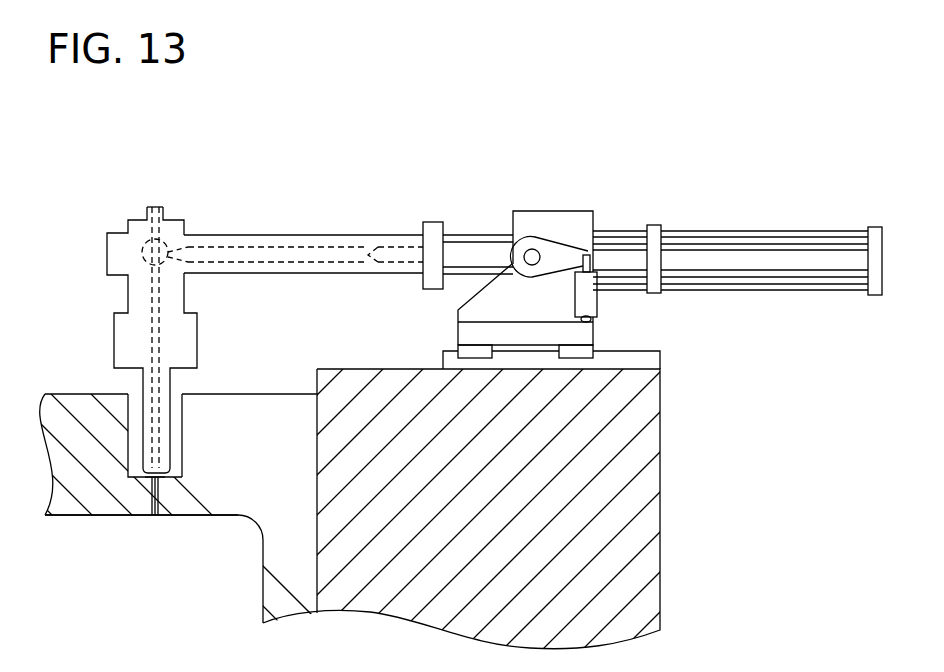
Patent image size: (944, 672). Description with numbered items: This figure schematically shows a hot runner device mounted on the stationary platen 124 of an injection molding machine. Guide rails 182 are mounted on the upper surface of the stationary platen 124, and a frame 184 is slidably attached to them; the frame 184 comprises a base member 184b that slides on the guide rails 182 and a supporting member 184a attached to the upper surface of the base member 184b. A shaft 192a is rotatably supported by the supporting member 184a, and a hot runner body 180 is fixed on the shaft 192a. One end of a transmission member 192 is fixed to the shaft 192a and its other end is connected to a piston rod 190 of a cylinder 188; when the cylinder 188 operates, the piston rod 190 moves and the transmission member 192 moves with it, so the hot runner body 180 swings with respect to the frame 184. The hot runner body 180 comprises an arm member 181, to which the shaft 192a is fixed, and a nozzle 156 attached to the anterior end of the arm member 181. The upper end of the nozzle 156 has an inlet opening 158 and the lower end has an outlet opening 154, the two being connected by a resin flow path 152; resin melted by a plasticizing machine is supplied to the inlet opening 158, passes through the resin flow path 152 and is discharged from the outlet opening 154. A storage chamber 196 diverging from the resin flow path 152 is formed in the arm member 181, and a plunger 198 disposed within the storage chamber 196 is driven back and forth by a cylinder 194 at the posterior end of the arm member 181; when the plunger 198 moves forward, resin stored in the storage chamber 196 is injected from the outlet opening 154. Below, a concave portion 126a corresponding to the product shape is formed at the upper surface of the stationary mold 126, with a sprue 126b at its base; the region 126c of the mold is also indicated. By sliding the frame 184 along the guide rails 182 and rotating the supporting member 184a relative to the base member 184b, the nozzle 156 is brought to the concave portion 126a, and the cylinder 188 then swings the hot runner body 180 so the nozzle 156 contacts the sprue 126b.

The stationary platen 124 is at (661, 489).
The stationary mold 126 is at (58, 394).
The concave portion 126a is at (133, 413).
The sprue 126b is at (158, 505).
The bottom surface 126c is at (105, 517).
The resin flow path 152 is at (147, 302).
The outlet opening 154 is at (155, 517).
The nozzle 156 is at (178, 415).
The inlet opening 158 is at (155, 207).
The hot runner body 180 is at (778, 227).
The arm member 181 is at (318, 235).
The guide rails 182 is at (660, 360).
The frame 184 is at (580, 210).
The supporting member 184a is at (472, 309).
The base member 184b is at (475, 334).
The cylinder 188 is at (598, 300).
The piston rod 190 is at (590, 256).
The transmission member 192 is at (548, 236).
The shaft 192a is at (515, 255).
The cylinder 194 is at (838, 268).
The storage chamber 196 is at (260, 240).
The plunger 198 is at (402, 232).